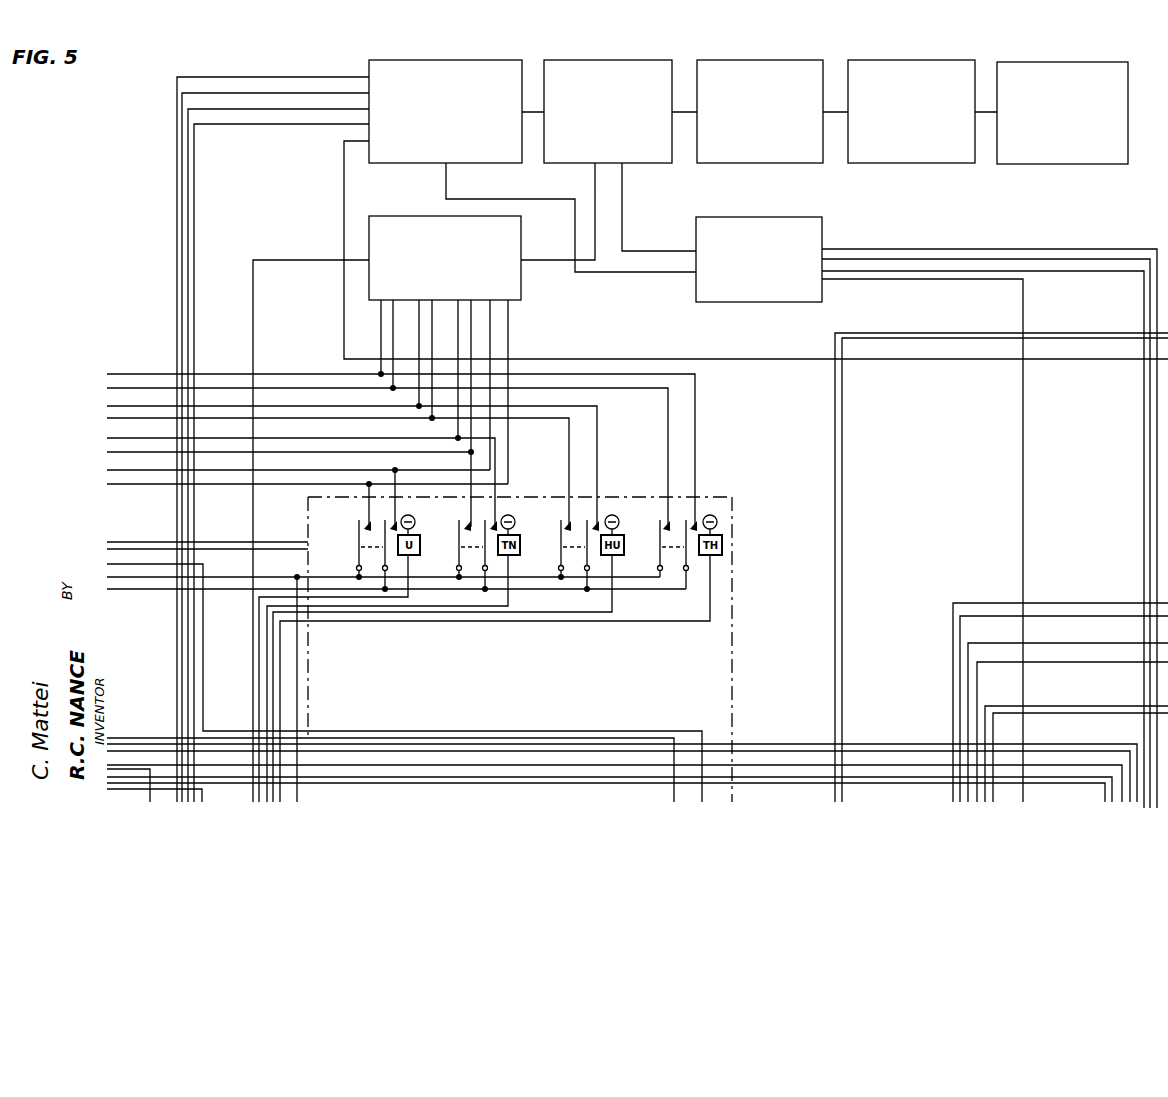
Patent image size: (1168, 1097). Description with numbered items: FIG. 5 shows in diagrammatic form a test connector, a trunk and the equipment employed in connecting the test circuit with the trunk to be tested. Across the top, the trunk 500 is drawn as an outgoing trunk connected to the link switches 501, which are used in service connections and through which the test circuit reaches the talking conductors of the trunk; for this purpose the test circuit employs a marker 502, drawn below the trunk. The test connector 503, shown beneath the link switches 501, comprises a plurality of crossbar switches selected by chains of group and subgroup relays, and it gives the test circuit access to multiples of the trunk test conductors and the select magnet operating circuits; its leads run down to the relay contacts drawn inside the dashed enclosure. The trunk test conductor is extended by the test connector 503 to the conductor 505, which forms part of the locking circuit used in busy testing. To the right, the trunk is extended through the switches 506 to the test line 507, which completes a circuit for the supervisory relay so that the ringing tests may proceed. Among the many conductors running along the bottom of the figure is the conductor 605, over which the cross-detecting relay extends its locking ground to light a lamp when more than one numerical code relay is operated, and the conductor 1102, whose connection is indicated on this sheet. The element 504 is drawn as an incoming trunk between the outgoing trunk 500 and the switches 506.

The trunk 500 is at (582, 60).
The link switches 501 is at (437, 60).
The marker 502 is at (778, 217).
The test connector 503 is at (371, 216).
The incoming trunk 504 is at (733, 60).
The conductor 505 is at (253, 291).
The switches 506 is at (885, 60).
The test line 507 is at (1040, 62).
The conductor 605 is at (417, 738).
The conductor 1102 is at (562, 731).